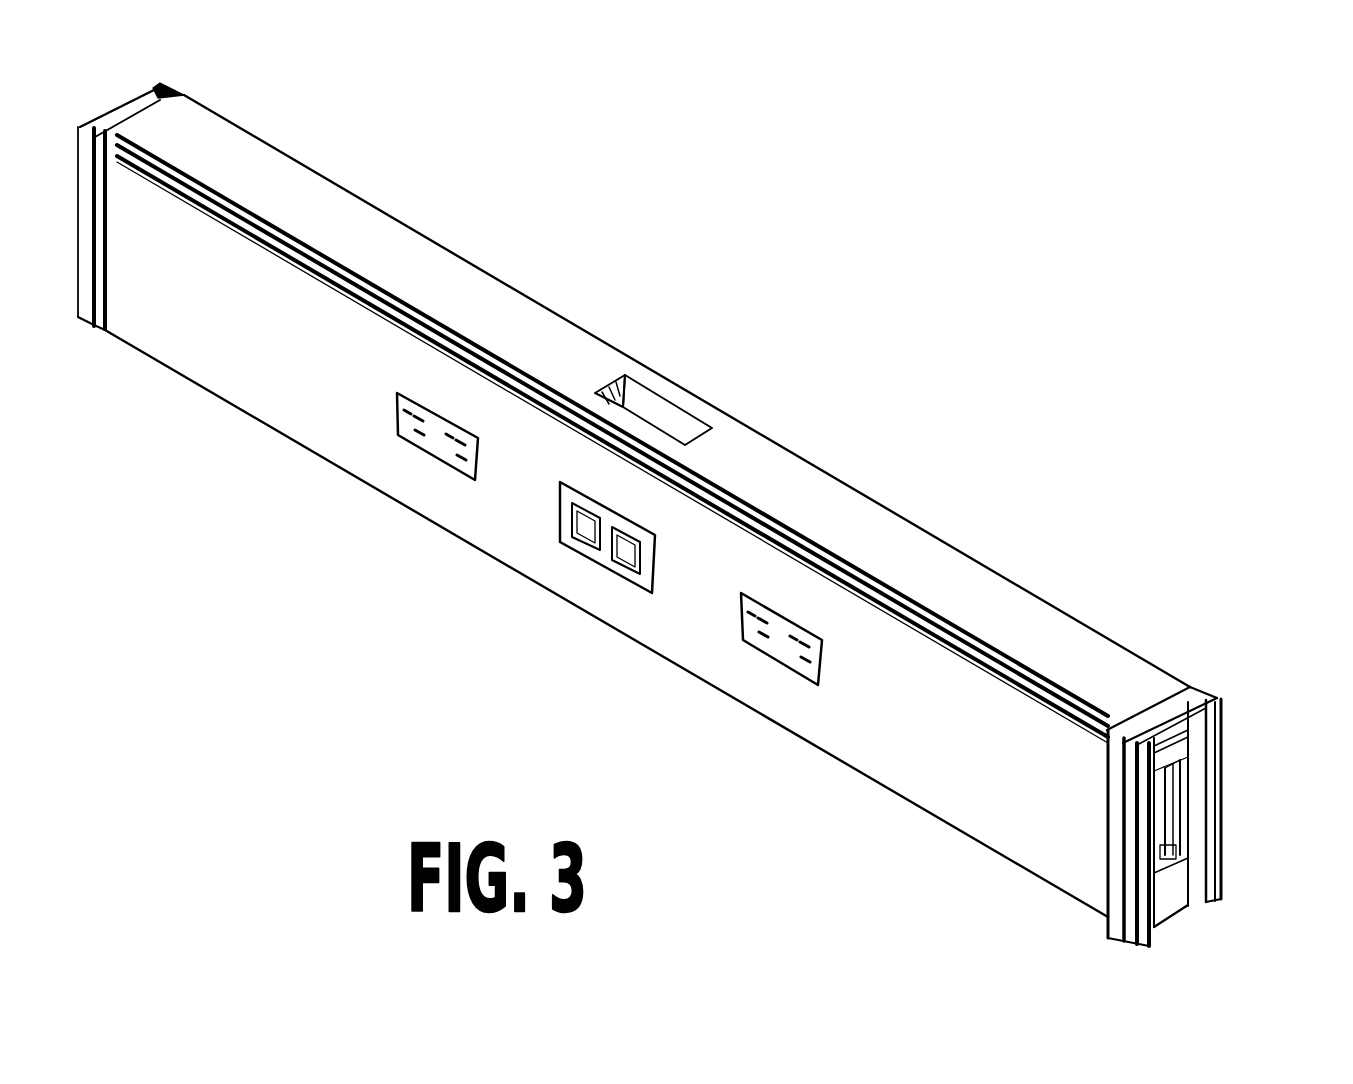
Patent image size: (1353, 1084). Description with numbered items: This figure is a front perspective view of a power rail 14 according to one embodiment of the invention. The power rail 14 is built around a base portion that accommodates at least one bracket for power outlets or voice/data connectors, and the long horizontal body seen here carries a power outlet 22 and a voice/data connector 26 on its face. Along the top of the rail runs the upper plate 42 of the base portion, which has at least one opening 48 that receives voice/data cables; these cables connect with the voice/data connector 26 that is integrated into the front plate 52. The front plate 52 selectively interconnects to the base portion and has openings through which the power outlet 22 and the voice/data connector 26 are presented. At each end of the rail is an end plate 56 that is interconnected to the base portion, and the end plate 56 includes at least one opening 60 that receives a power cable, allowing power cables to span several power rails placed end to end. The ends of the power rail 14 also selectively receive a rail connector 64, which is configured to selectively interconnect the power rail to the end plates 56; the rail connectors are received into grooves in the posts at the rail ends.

The power rail 14 is at (740, 297).
The power outlet 22 is at (448, 457).
The voice/data connector 26 is at (587, 547).
The upper plate 42 is at (923, 550).
The opening 48 is at (675, 422).
The front plate 52 is at (863, 727).
The end plate 56 is at (138, 102).
The opening 60 is at (1190, 783).
The rail connector 64 is at (87, 303).